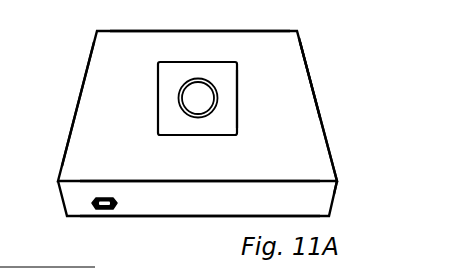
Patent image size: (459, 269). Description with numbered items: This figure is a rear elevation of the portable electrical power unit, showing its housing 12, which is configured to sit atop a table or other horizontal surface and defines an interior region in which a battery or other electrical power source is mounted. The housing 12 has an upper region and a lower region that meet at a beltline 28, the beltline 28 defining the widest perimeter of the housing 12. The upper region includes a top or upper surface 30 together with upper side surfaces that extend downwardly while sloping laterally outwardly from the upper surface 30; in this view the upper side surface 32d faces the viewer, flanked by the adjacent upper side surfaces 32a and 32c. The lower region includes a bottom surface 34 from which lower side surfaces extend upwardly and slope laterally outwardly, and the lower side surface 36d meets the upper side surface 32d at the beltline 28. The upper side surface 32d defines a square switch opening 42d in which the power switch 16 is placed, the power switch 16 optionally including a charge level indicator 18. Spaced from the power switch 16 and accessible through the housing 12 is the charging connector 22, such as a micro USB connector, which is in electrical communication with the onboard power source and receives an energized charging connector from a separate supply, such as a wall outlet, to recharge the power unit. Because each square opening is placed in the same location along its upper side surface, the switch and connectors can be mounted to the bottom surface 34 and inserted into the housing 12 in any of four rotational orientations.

The housing 12 is at (85, 75).
The upper surface 30 is at (190, 29).
The upper side surface 32c is at (80, 90).
The upper side surface 32a is at (321, 112).
The upper side surface 32d is at (289, 98).
The beltline 28 is at (341, 182).
The lower side surface 36d is at (163, 197).
The bottom surface 34 is at (202, 217).
The power switch 16 is at (165, 75).
The switch opening 42d is at (237, 99).
The charge level indicator 18 is at (183, 107).
The charging connector 22 is at (92, 198).